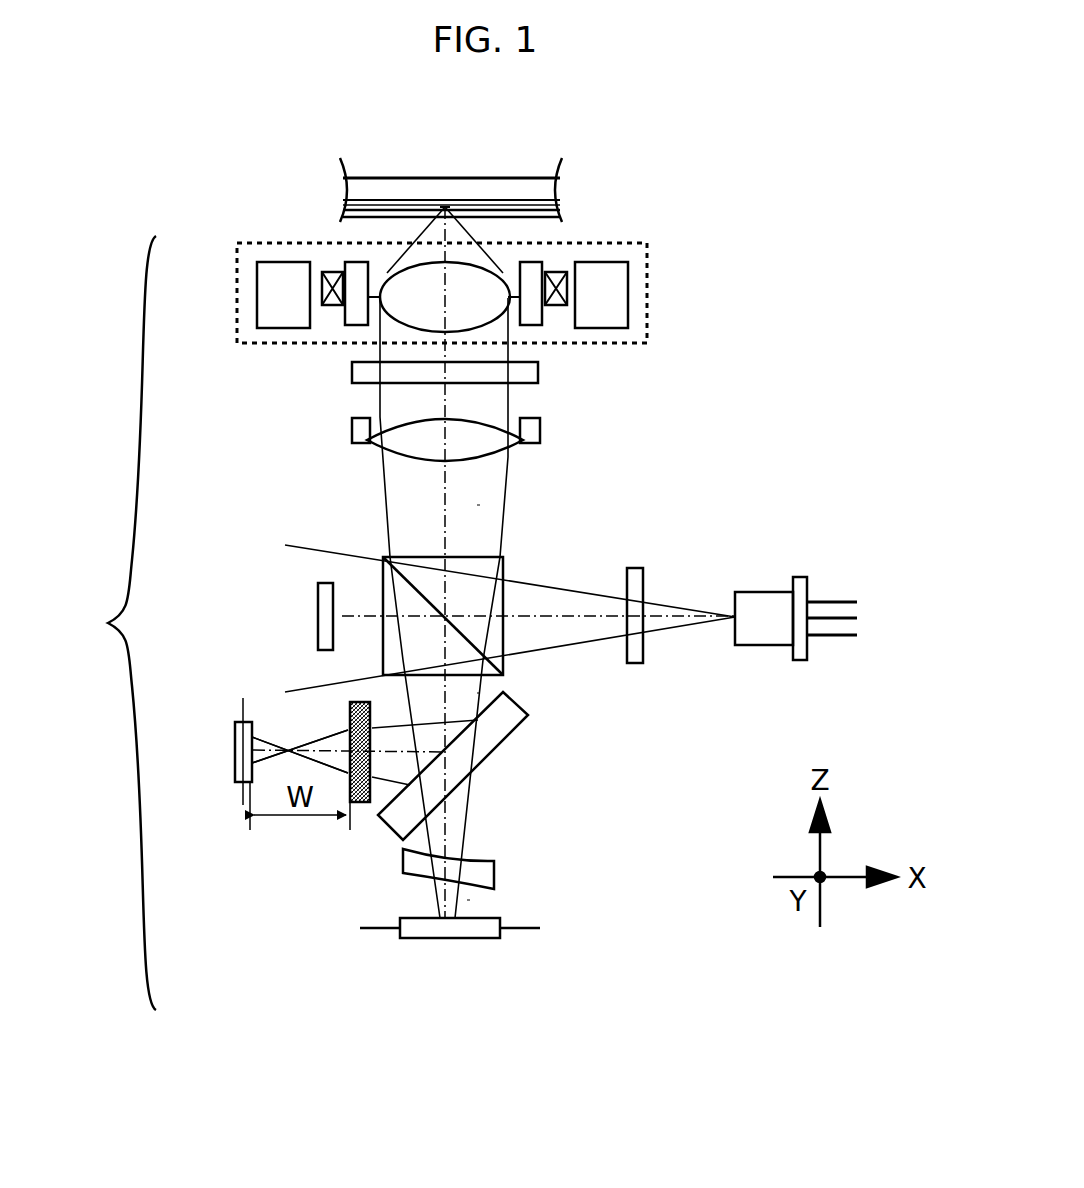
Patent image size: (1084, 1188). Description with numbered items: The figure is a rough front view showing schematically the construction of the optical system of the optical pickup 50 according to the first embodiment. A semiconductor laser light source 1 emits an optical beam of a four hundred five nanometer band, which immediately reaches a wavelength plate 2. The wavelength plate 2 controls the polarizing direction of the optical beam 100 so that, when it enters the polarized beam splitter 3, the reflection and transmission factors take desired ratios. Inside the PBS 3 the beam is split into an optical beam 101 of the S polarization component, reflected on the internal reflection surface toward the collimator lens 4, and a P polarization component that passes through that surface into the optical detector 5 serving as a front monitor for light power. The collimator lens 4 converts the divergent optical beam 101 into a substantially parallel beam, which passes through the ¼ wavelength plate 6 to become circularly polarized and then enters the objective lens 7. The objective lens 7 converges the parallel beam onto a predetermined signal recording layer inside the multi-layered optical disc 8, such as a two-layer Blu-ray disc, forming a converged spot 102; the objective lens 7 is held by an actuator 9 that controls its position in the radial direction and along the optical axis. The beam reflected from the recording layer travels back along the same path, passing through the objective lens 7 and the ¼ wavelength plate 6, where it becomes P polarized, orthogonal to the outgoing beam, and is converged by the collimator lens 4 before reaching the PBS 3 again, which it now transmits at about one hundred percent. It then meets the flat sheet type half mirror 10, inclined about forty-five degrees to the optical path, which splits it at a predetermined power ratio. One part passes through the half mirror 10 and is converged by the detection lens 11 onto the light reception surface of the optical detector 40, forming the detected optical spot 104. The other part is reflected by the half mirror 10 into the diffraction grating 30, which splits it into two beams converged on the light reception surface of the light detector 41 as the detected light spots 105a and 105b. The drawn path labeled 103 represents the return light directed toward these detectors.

The semiconductor laser light source 1 is at (772, 592).
The wavelength plate 2 is at (631, 568).
The polarized beam splitter 3 is at (398, 586).
The collimator lens 4 is at (363, 437).
The optical detector for monitoring light power 5 is at (313, 595).
The ¼ wavelength plate 6 is at (363, 386).
The objective lens 7 is at (418, 286).
The multi-layered optical disc 8 is at (478, 192).
The actuator 9 is at (650, 307).
The flat sheet type half mirror 10 is at (513, 737).
The detection lens 11 is at (493, 860).
The diffraction grating 30 is at (370, 803).
The optical detector 40 is at (477, 938).
The light detector 41 is at (235, 755).
The optical pickup 50 is at (97, 636).
The optical beam incident into the PBS 100 is at (553, 600).
The optical beam of S polarization component 101 is at (477, 505).
The converged spot 102 is at (442, 205).
The reflected light beam 103 is at (477, 693).
The detected optical spot 104 is at (467, 900).
The detected light spot 105a is at (263, 727).
The detected light spot 105b is at (263, 780).